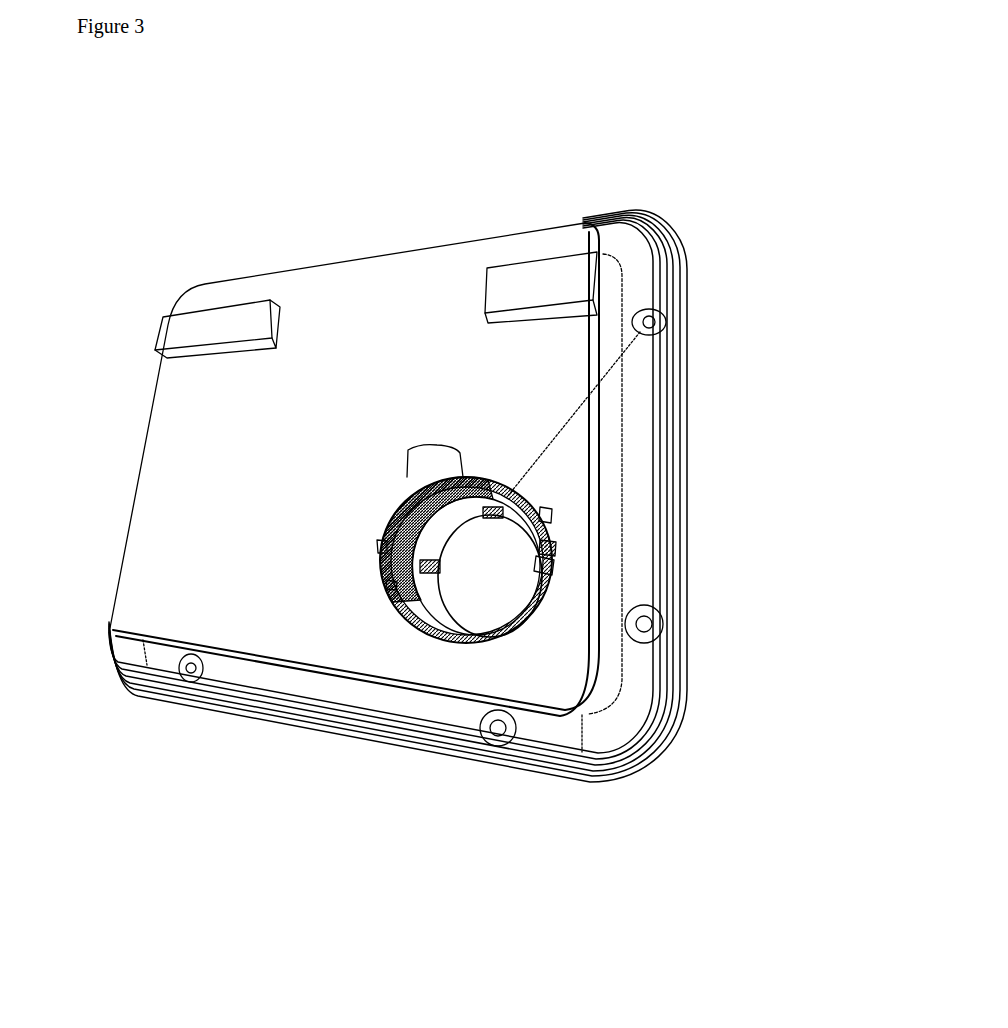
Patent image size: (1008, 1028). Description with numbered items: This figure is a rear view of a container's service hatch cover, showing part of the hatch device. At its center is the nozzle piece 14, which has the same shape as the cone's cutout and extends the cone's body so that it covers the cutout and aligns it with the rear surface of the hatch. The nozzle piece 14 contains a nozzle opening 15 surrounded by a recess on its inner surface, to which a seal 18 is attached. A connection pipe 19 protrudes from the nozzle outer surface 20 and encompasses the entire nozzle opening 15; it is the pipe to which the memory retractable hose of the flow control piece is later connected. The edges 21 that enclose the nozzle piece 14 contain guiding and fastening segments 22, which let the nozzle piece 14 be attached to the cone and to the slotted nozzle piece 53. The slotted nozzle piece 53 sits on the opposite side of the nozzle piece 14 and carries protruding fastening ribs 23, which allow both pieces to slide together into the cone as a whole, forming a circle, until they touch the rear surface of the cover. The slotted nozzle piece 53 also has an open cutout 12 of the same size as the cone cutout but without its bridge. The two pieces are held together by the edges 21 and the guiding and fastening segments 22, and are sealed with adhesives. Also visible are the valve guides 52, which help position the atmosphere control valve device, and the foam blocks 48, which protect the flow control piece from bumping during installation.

The open cutout 12 is at (500, 617).
The nozzle piece 14 is at (543, 505).
The nozzle opening 15 is at (423, 513).
The seal 18 is at (378, 568).
The connection pipe 19 is at (463, 457).
The nozzle outer surface 20 is at (552, 552).
The edges 21 is at (545, 533).
The guiding and fastening segments 22 is at (553, 570).
The protruding fastening ribs 23 is at (540, 603).
The foam blocks 48 is at (180, 318).
The valve guides 52 is at (662, 312).
The slotted nozzle piece 53 is at (393, 613).